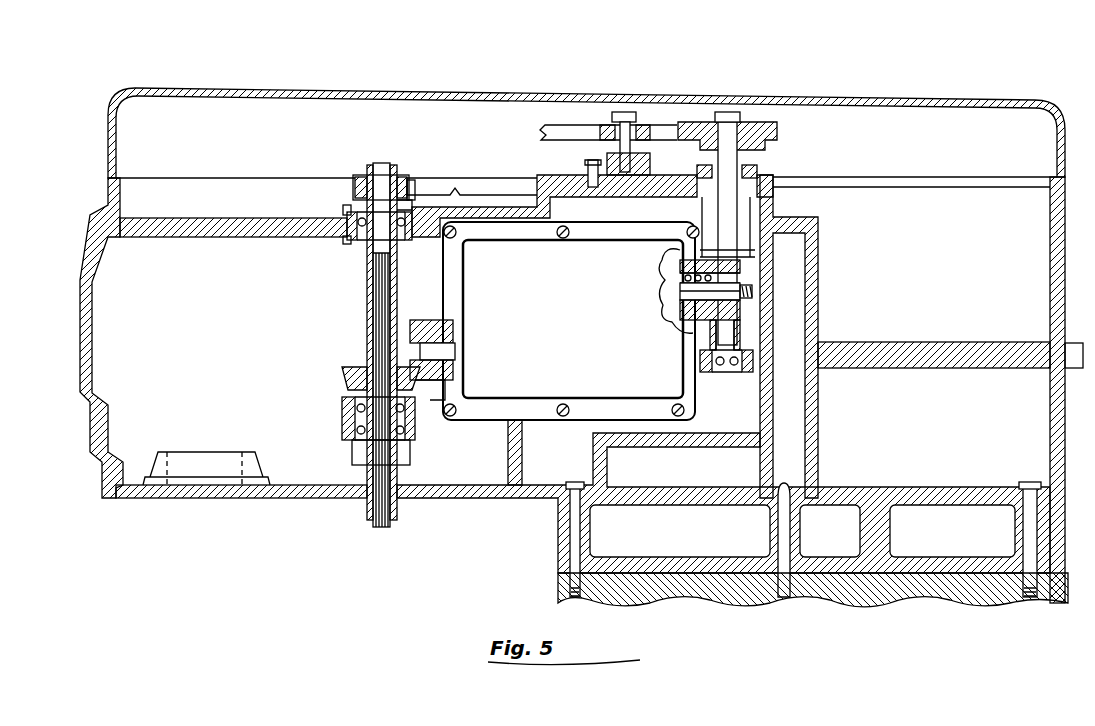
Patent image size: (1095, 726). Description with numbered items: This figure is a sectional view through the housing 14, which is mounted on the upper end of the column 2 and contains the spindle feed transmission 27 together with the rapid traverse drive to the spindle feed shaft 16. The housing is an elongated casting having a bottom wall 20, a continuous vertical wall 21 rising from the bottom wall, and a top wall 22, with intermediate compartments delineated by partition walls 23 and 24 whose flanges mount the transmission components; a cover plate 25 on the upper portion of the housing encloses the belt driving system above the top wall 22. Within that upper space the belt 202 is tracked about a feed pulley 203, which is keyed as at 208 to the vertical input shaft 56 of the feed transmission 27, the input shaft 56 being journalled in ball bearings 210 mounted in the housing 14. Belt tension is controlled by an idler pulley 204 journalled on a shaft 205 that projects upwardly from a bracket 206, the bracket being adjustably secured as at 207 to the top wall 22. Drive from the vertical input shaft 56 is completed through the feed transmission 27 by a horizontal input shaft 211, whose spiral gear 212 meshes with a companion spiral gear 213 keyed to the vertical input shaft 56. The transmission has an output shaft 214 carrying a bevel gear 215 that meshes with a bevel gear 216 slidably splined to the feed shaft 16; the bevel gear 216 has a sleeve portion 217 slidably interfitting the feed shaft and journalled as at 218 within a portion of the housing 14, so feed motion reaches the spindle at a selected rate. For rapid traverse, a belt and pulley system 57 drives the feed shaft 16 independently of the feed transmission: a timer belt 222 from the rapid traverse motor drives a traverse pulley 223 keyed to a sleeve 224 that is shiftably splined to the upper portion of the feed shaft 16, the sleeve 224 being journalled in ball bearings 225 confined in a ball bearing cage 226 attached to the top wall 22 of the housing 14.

The column 2 is at (865, 585).
The housing 14 is at (76, 264).
The spindle feed shaft 16 is at (372, 518).
The bottom wall 20 is at (255, 498).
The continuous vertical wall 21 is at (80, 338).
The top wall 22 is at (168, 218).
The partition wall 23 is at (522, 458).
The partition wall 24 is at (818, 447).
The cover plate 25 is at (186, 88).
The spindle feed transmission 27 is at (493, 238).
The input shaft 56 is at (760, 212).
The belt and pulley system 57 is at (455, 182).
The belt 202 is at (660, 125).
The feed pulley 203 is at (780, 134).
The idler pulley 204 is at (645, 125).
The shaft 205 is at (622, 112).
The bracket 206 is at (588, 170).
The adjustable securing means 207 is at (610, 176).
The key 208 is at (730, 110).
The ball bearings 210 is at (757, 170).
The horizontal input shaft 211 is at (682, 296).
The spiral gear 212 is at (742, 268).
The companion spiral gear 213 is at (700, 252).
The output shaft 214 is at (452, 352).
The bevel gear 215 is at (422, 320).
The bevel gear 216 is at (342, 380).
The sleeve portion 217 is at (342, 418).
The journals 218 is at (440, 395).
The timer belt 222 is at (404, 195).
The traverse pulley 223 is at (358, 176).
The sleeve 224 is at (367, 300).
The ball bearings 225 is at (410, 200).
The ball bearing cage 226 is at (343, 211).